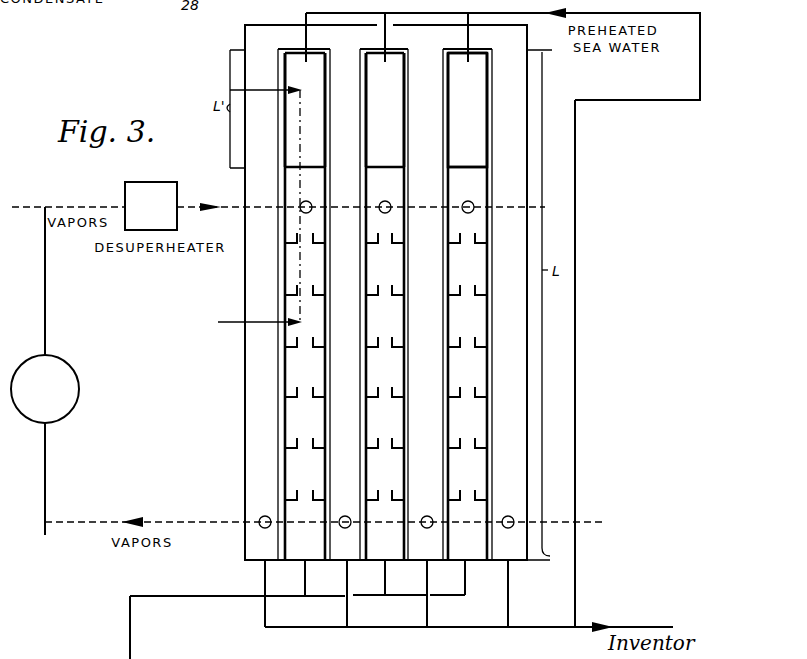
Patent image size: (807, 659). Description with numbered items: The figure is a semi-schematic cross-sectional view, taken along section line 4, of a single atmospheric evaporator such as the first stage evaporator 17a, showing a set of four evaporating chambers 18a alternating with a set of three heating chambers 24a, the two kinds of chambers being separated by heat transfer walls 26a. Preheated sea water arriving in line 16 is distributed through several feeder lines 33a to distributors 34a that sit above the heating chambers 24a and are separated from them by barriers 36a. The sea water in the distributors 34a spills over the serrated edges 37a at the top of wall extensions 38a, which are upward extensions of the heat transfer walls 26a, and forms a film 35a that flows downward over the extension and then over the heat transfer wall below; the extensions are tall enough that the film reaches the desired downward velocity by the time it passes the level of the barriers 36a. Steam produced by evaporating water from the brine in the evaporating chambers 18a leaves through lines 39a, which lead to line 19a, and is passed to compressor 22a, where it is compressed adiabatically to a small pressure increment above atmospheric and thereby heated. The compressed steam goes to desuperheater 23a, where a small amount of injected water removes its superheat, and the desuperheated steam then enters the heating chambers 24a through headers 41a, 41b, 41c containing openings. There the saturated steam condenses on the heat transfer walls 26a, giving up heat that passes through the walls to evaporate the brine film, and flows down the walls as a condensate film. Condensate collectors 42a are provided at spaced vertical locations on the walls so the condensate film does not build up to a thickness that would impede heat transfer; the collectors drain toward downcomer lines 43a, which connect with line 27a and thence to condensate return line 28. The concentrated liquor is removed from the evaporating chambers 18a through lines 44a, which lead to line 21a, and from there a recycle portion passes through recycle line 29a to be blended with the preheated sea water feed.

The section line 4- 4 is at (260, 200).
The heated sea water line 16 is at (503, 50).
The first atmospheric evaporator 17a is at (530, 470).
The first stage evaporating chambers 18a is at (497, 263).
The steam withdrawal line 19a is at (96, 521).
The brine concentrate line 21a is at (398, 628).
The compressor 22a is at (71, 366).
The desuperheater 23a is at (178, 182).
The first stage heating chambers 24a is at (296, 435).
The heat transfer walls 26a is at (284, 299).
The condensate line 27a is at (163, 596).
The condensate return line 28 is at (109, 627).
The recycle line 29a is at (575, 245).
The feeder lines 33a is at (394, 31).
The distributors 34a is at (478, 128).
The film 35a is at (248, 264).
The barriers 36a is at (312, 167).
The serrated edges 37a is at (283, 51).
The wall extensions 38a is at (282, 108).
The vapor outlet lines 39a is at (266, 528).
The steam header 41a is at (308, 213).
The steam header 41b is at (387, 213).
The steam header 41c is at (470, 213).
The condensate collectors 42a is at (398, 237).
The downcomer lines 43a is at (305, 579).
The concentrated liquor removal lines 44a is at (346, 607).